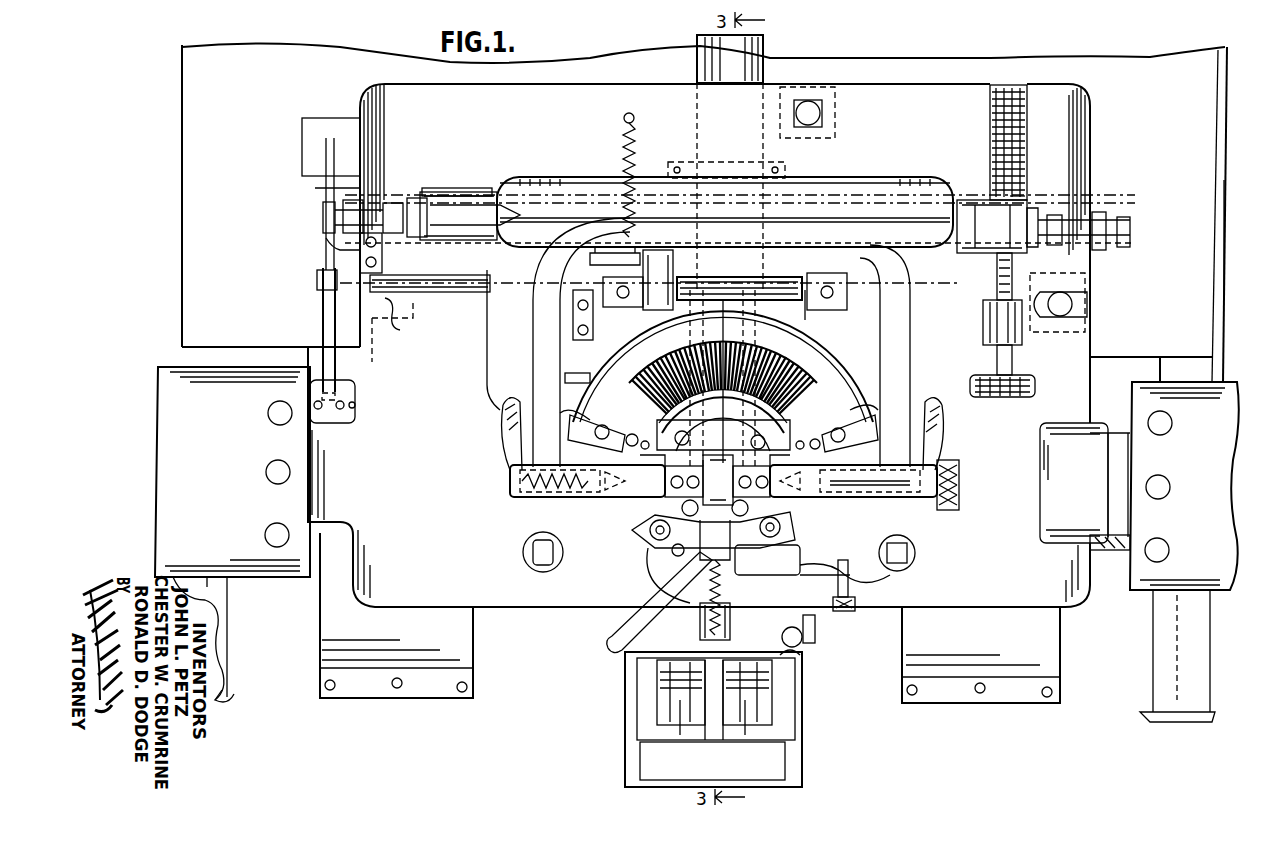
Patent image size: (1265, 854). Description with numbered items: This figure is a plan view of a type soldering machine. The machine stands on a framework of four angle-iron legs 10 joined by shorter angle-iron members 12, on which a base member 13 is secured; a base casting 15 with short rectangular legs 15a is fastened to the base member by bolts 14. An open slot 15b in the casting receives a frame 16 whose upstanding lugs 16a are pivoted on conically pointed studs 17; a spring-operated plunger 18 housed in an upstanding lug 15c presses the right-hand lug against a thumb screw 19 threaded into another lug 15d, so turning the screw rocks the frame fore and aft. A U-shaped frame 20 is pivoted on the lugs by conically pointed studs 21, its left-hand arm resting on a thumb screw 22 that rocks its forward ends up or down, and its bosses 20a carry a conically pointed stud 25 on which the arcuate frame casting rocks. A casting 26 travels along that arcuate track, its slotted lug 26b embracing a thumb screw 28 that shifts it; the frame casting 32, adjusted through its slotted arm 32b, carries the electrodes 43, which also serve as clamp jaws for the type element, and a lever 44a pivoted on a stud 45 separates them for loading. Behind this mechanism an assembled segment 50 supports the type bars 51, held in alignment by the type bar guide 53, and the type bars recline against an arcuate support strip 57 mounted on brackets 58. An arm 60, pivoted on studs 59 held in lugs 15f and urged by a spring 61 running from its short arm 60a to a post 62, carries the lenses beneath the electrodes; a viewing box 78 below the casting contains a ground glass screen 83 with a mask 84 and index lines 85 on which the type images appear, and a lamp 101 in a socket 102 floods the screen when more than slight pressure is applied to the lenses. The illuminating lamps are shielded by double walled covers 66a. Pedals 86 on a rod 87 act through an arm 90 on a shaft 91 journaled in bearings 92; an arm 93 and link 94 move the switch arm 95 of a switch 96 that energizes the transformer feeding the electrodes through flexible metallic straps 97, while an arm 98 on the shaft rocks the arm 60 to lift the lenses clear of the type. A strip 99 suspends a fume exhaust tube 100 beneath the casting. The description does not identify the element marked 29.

The legs 10 is at (226, 694).
The angle iron members 12 is at (200, 357).
The base member 13 is at (1213, 186).
The bolts 14 is at (808, 105).
The base casting 15 is at (1065, 180).
The short rectangular legs 15a is at (835, 105).
The open slot 15b is at (445, 190).
The upstanding lug 15c is at (1030, 150).
The upstanding lug 15d is at (1022, 338).
The lugs 15f is at (838, 270).
The frame 16 is at (455, 248).
The upstanding lugs 16a is at (465, 210).
The studs 17 is at (377, 203).
The spring-operated plunger 18 is at (1016, 196).
The thumb screw 19 is at (1015, 282).
The U-shaped frame 20 is at (845, 190).
The bosses 20a is at (540, 508).
The conically pointed studs 21 is at (400, 203).
The thumb screw 22 is at (522, 552).
The conically pointed stud 25 is at (950, 490).
The casting 26 is at (640, 560).
The slotted lug 26b is at (880, 594).
The thumb screw 28 is at (848, 612).
The knob 29 is at (915, 545).
The frame casting 32 is at (758, 560).
The short slotted arm 32b is at (706, 622).
The electrodes 43 is at (658, 492).
The lever 44a is at (625, 638).
The stud 45 is at (650, 528).
The assembled segment 50 is at (800, 372).
The type bars 51 is at (657, 447).
The type bar guide 53 is at (722, 440).
The arcuate support strip 57 is at (793, 328).
The brackets 58 is at (556, 418).
The conically pointed studs 59 is at (796, 285).
The arm 60 is at (760, 278).
The short arm 60a is at (672, 262).
The spring 61 is at (634, 166).
The post 62 is at (634, 118).
The double walled covers 66a is at (175, 430).
The viewing box 78 is at (625, 718).
The ground glass screen 83 is at (765, 710).
The mask 84 is at (642, 690).
The index lines 85 is at (735, 705).
The pedals 86 is at (470, 626).
The rod 87 is at (1098, 548).
The arm 90 is at (328, 323).
The shaft 91 is at (448, 294).
The bearings 92 is at (356, 255).
The arm 93 is at (326, 238).
The link 94 is at (326, 187).
The switch arm 95 is at (336, 145).
The switch 96 is at (312, 137).
The flexible metallic straps 97 is at (505, 440).
The arm 98 is at (635, 226).
The strip 99 is at (742, 162).
The tube 100 is at (715, 63).
The electric incandescent lamp 101 is at (795, 663).
The socket 102 is at (800, 640).